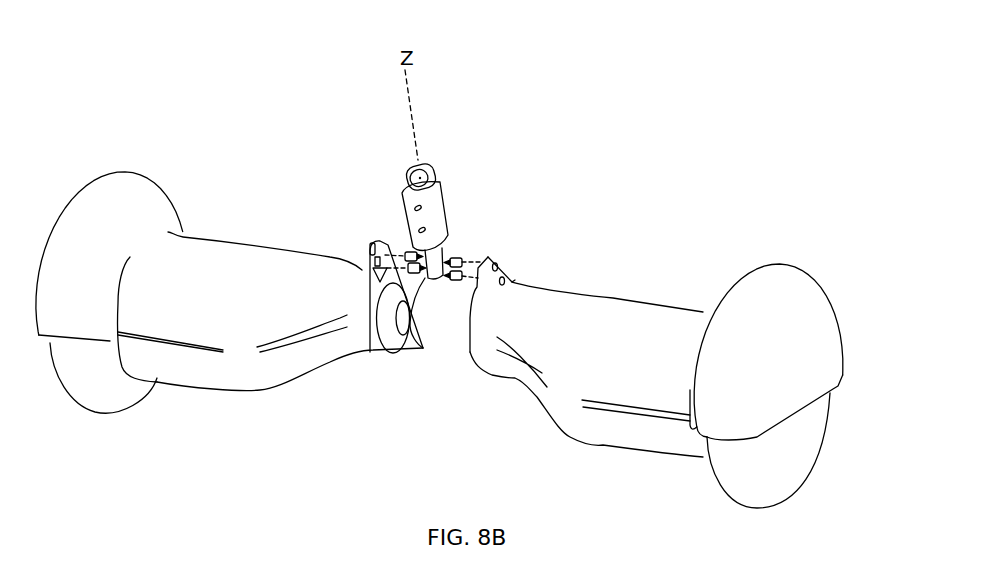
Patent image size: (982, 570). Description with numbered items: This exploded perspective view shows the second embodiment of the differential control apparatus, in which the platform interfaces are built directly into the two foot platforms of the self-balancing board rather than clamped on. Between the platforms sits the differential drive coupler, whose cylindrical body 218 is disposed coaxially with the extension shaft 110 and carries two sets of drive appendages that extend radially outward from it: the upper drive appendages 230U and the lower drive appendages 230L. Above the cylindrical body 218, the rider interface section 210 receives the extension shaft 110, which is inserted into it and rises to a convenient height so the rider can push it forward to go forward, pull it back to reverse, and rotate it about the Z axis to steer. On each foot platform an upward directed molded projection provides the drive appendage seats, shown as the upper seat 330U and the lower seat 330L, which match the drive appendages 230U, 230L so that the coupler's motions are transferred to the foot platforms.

The extension shaft 110 is at (407, 167).
The rider interface section 210 is at (402, 221).
The cylindrical body 218 is at (423, 348).
The upper drive appendages 230U is at (456, 260).
The lower drive appendages 230L is at (455, 275).
The upper drive appendage seat 330U is at (500, 267).
The lower drive appendage seat 330L is at (507, 283).